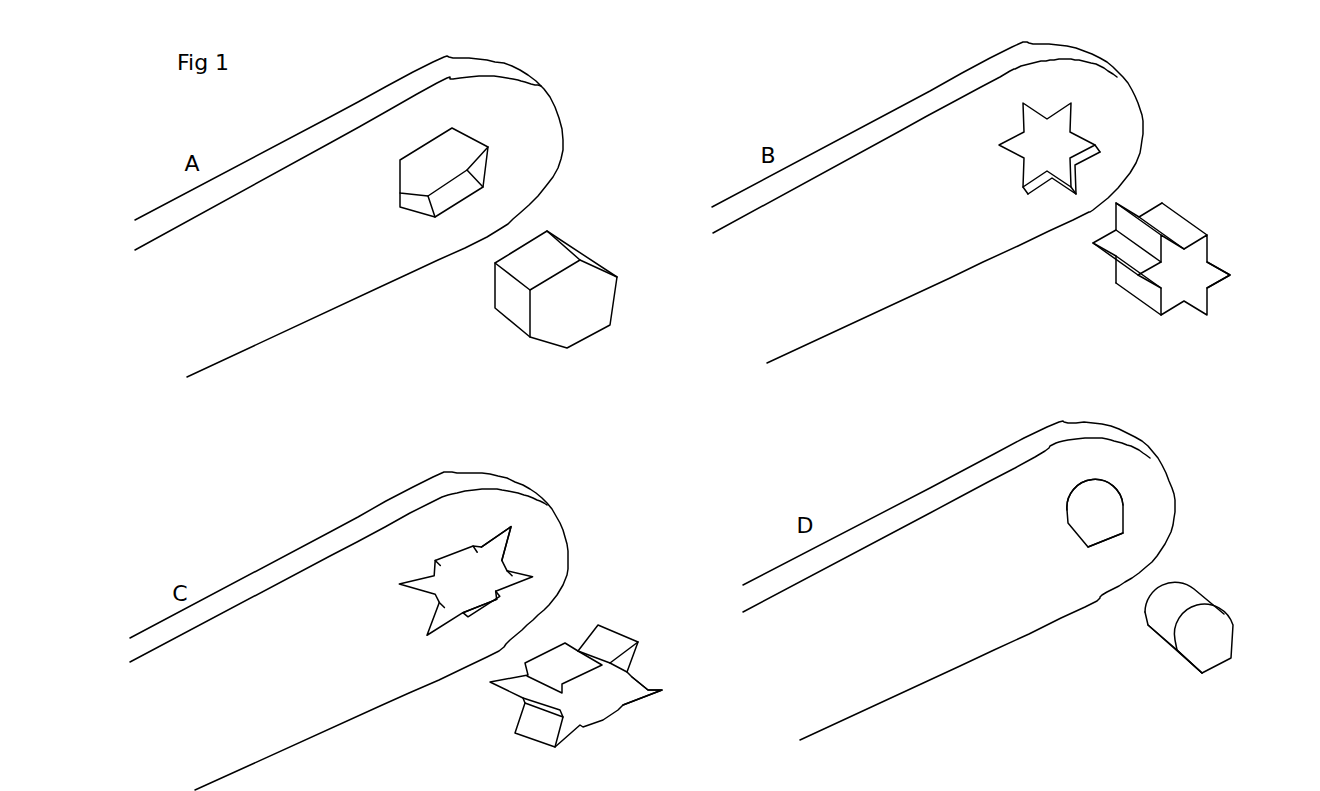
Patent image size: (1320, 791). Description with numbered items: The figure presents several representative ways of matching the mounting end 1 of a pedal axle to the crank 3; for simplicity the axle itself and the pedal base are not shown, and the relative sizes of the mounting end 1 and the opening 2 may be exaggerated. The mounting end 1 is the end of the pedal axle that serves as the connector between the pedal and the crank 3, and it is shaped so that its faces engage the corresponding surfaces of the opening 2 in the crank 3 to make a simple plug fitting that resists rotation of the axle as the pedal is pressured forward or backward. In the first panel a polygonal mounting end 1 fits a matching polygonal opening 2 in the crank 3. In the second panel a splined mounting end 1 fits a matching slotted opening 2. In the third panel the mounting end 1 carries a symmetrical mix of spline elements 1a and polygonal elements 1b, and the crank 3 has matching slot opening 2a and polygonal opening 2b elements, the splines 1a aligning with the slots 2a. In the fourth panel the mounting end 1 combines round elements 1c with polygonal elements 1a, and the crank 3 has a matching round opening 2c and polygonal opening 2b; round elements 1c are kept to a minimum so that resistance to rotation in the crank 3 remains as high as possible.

The mounting end 1 is at (578, 300).
The spline elements 1a is at (1229, 273).
The polygonal elements 1b is at (603, 720).
The round elements 1c is at (1165, 618).
The opening 2 is at (453, 157).
The slot opening 2a is at (507, 528).
The polygonal opening 2b is at (473, 610).
The round opening 2c is at (1092, 478).
The crank 3 is at (357, 172).